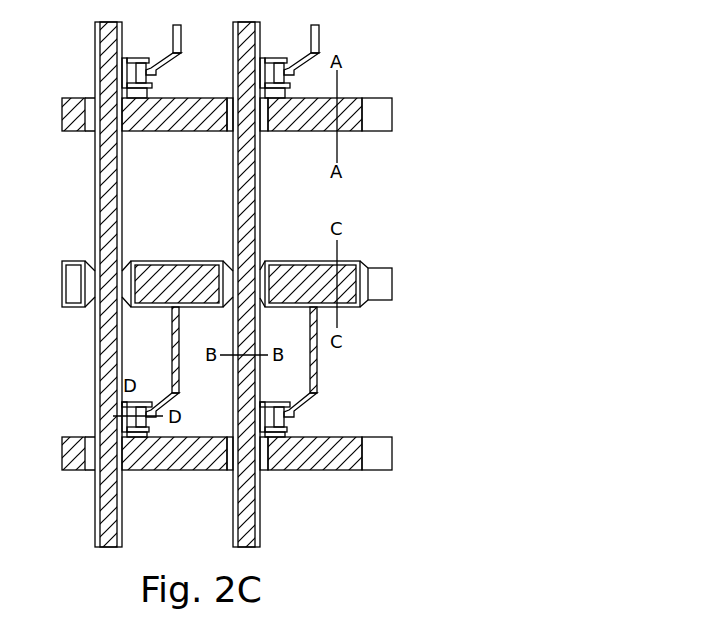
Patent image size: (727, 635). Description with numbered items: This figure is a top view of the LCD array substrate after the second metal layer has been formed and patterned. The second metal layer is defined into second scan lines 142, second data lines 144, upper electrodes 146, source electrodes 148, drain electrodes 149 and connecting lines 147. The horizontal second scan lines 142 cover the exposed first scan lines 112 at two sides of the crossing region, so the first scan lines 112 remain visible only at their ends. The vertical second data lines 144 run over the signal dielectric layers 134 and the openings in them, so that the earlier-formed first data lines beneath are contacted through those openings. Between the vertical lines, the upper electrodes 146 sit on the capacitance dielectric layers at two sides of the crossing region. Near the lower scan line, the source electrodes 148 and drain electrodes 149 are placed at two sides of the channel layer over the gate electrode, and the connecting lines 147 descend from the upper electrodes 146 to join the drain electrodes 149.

The first scan line 112 is at (378, 116).
The signal dielectric layer 134 is at (263, 120).
The second scan line 142 is at (352, 103).
The second data line 144 is at (245, 190).
The upper electrode 146 is at (349, 279).
The connecting line 147 is at (317, 357).
The source electrode 148 is at (133, 392).
The drain electrode 149 is at (153, 430).